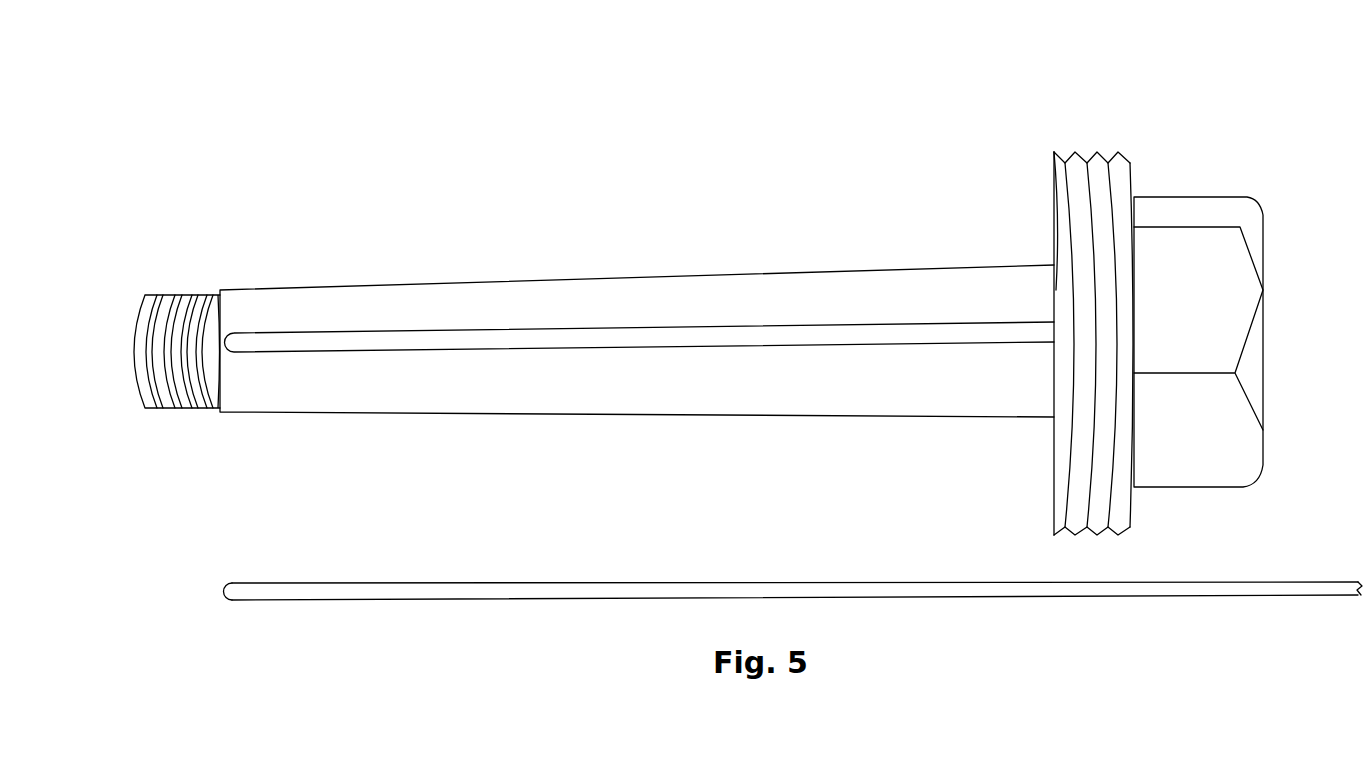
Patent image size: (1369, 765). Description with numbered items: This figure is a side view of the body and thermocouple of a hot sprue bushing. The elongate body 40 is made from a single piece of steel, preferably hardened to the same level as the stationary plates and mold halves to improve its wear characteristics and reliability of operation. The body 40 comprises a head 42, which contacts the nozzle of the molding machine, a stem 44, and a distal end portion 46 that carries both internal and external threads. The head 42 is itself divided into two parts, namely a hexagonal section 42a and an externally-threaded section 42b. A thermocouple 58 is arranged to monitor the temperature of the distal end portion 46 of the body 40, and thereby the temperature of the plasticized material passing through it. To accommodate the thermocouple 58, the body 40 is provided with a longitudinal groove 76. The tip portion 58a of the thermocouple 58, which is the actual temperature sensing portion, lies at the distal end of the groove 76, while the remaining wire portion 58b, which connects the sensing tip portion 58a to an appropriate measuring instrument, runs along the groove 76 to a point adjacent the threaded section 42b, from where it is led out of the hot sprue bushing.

The body 40 is at (725, 235).
The head 42 is at (1100, 127).
The hexagonal section 42a is at (1102, 202).
The externally-threaded section 42b is at (1227, 283).
The stem 44 is at (740, 297).
The distal end portion 46 is at (167, 310).
The longitudinal groove 76 is at (345, 342).
The thermocouple 58 is at (650, 588).
The tip portion 58a is at (238, 592).
The wire portion 58b is at (1210, 585).